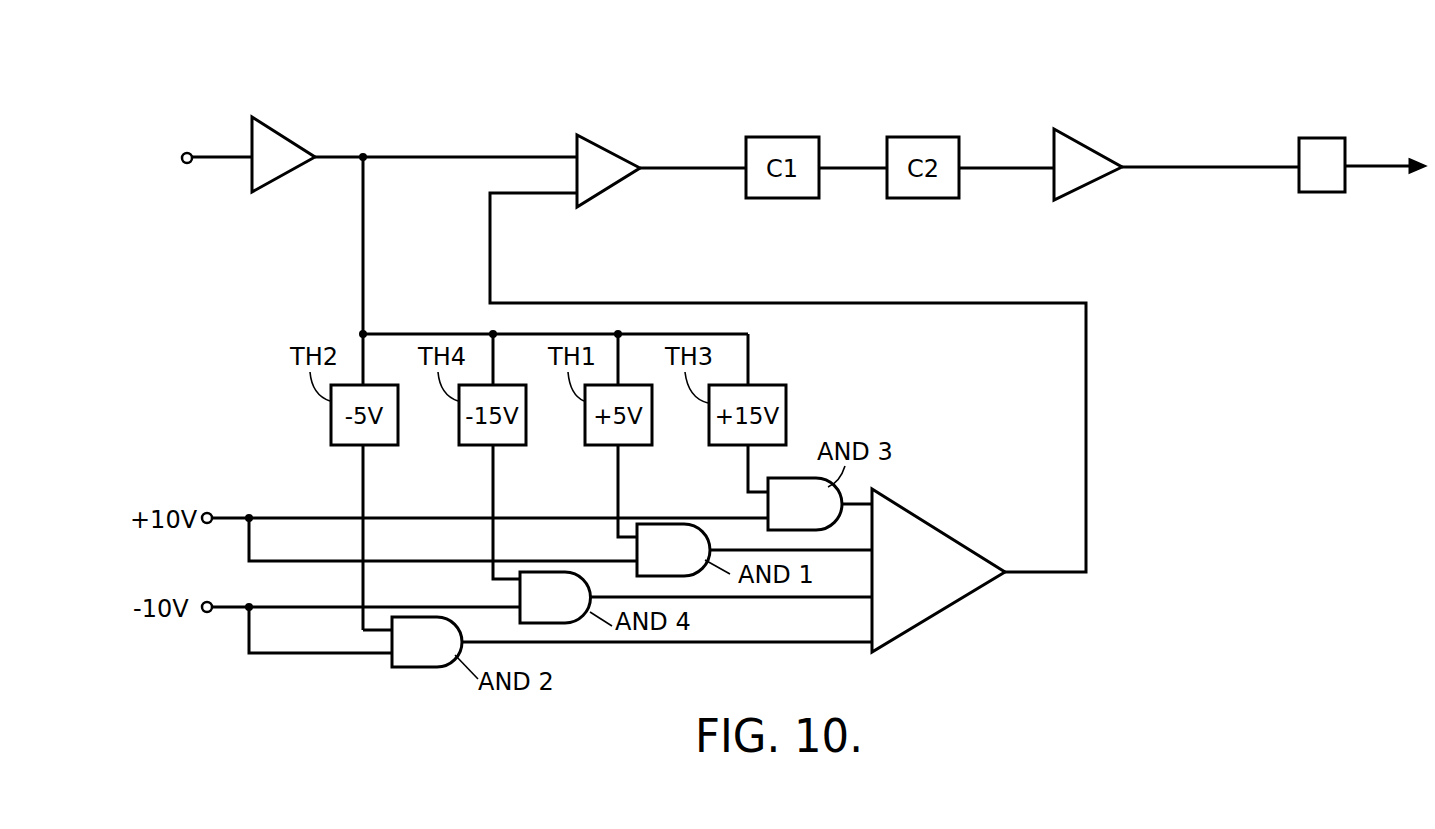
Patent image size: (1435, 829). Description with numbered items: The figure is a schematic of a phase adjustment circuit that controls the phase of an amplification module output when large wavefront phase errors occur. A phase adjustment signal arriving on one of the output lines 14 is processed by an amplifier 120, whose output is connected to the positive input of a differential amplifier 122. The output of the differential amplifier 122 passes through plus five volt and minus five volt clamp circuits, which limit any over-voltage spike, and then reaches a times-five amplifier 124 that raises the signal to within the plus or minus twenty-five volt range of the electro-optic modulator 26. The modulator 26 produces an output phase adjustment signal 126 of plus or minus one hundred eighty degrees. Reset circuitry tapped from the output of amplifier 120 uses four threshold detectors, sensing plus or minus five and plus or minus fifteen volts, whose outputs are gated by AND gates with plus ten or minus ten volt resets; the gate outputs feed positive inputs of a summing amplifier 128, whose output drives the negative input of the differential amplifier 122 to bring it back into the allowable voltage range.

The output line 14 is at (184, 152).
The amplifier 120 is at (283, 130).
The differential amplifier 122 is at (611, 148).
The X5 amplifier 124 is at (1094, 150).
The output phase adjustment signal 126 is at (1378, 160).
The electro-optic modulator 26 is at (1320, 195).
The summing amplifier 128 is at (937, 526).